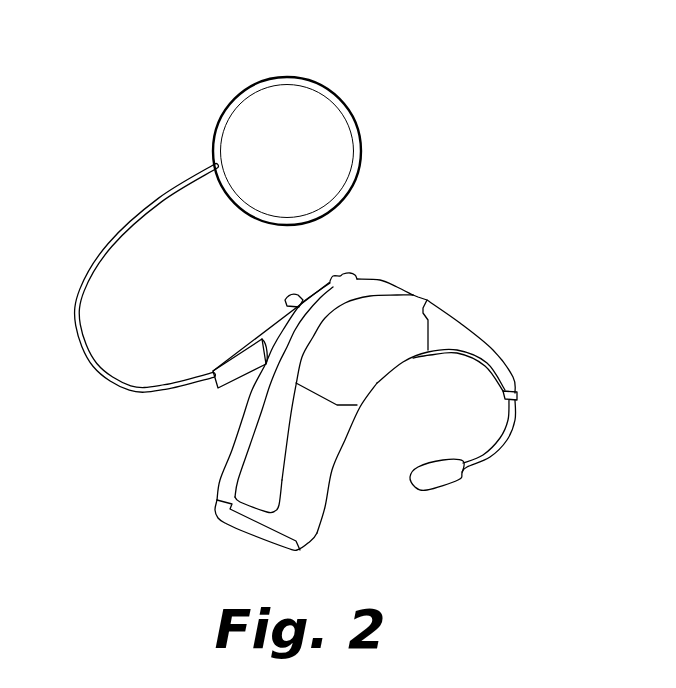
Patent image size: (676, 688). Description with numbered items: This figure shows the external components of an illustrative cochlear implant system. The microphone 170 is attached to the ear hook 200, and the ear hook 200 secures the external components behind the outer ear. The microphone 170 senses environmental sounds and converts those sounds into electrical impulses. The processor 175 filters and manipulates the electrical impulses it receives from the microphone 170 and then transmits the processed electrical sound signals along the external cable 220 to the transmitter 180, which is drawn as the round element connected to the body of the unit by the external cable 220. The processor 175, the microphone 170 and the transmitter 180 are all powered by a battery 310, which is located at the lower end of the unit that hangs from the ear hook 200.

The transmitter 180 is at (295, 82).
The external cable 220 is at (130, 222).
The ear hook 200 is at (450, 308).
The processor 175 is at (381, 378).
The microphone 170 is at (459, 480).
The battery 310 is at (322, 520).